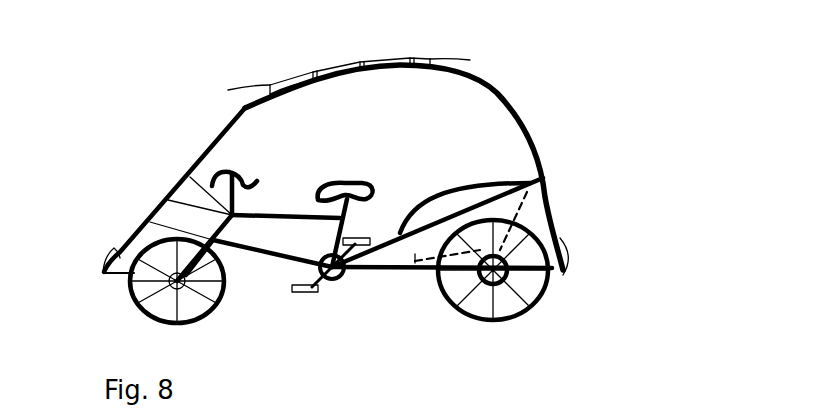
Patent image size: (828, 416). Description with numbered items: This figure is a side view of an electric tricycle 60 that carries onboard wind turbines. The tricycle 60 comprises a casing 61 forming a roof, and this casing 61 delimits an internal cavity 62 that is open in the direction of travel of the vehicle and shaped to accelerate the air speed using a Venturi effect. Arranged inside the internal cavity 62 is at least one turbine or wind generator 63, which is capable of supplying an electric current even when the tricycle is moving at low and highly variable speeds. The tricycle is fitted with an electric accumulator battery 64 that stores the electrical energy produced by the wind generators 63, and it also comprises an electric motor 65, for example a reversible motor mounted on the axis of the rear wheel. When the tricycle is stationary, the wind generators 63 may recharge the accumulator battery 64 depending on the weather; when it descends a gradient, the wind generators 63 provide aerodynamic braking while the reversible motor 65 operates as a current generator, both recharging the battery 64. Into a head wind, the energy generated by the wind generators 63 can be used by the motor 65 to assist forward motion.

The tricycle 60 is at (618, 15).
The casing 61 is at (226, 94).
The internal cavity 62 is at (306, 92).
The turbine (wind generator) 63 is at (271, 78).
The electric accumulator battery 64 is at (493, 245).
The electric motor 65 is at (483, 289).